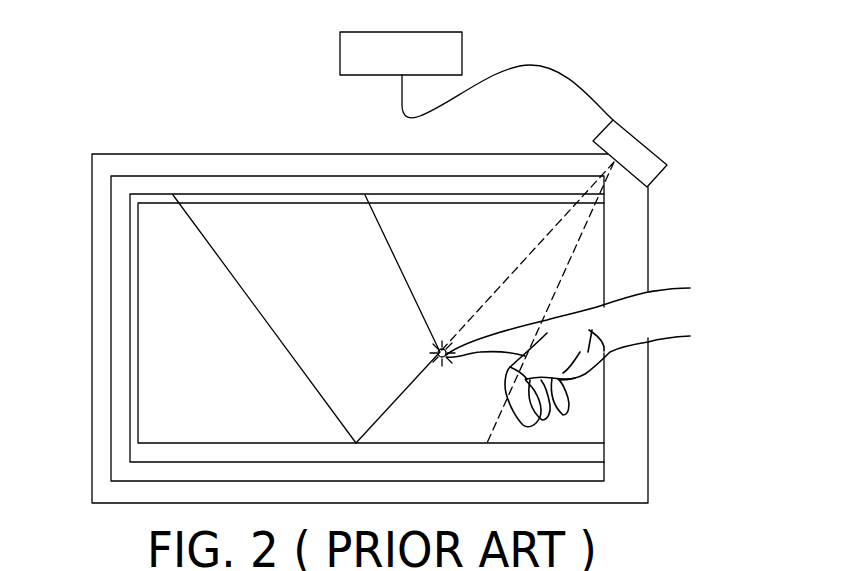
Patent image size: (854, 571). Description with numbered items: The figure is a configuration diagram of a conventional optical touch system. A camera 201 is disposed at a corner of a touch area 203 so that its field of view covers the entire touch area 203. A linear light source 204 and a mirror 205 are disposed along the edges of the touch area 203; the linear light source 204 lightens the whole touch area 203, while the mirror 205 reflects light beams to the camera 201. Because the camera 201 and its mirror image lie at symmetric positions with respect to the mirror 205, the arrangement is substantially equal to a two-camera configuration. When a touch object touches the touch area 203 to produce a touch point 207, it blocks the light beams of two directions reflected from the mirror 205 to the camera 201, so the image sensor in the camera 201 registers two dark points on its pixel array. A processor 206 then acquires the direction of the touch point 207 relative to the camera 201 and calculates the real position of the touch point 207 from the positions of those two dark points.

The camera 201 is at (643, 137).
The touch area 203 is at (233, 352).
The linear light source 204 is at (217, 183).
The mirror 205 is at (198, 468).
The processor 206 is at (340, 55).
The touch point 207 is at (432, 350).